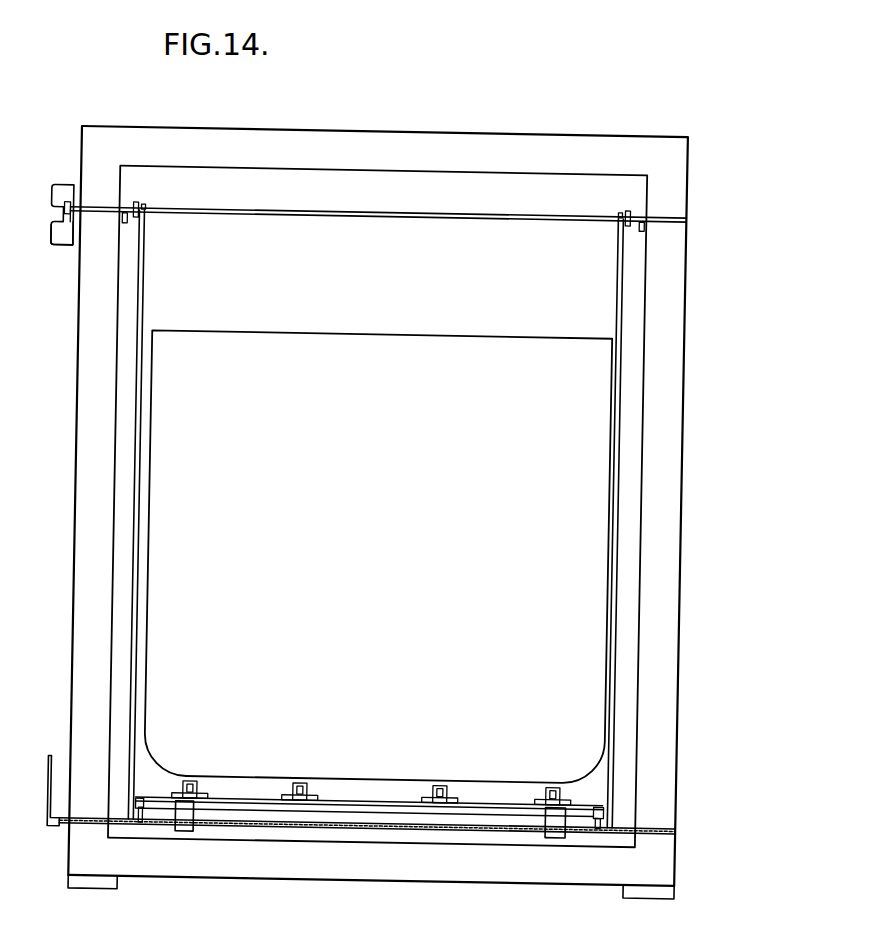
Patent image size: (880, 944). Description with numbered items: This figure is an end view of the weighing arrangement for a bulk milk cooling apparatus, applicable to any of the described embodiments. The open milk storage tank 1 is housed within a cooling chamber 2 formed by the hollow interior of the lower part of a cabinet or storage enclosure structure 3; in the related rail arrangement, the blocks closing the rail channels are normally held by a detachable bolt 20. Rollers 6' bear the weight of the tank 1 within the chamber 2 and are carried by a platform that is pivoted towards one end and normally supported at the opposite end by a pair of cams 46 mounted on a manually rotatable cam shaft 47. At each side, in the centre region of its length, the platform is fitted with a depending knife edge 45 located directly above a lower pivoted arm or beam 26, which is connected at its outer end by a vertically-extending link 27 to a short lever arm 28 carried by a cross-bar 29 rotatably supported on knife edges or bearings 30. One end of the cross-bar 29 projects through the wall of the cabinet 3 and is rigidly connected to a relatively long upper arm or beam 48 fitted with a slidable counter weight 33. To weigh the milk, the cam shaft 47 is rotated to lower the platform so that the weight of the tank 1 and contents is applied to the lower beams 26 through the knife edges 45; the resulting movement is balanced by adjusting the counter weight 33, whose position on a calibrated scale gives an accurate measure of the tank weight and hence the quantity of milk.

The milk storage tank 1 is at (375, 356).
The cooling chamber 2 is at (642, 627).
The cabinet or storage enclosure structure 3 is at (380, 163).
The detachable bolt 20 is at (257, 794).
The lower pivoted arm or beam 26 is at (162, 821).
The vertically-extending link 27 is at (148, 280).
The short lever arm 28 is at (135, 205).
The cross-bar 29 is at (393, 206).
The knife edges or bearings 30 is at (129, 225).
The slidable counter weight 33 is at (63, 249).
The depending knife edge 45 is at (155, 798).
The cam 46 is at (215, 811).
The manually rotatable cam shaft 47 is at (393, 823).
The upper arm or beam 48 is at (65, 208).
The rollers 6' is at (369, 854).